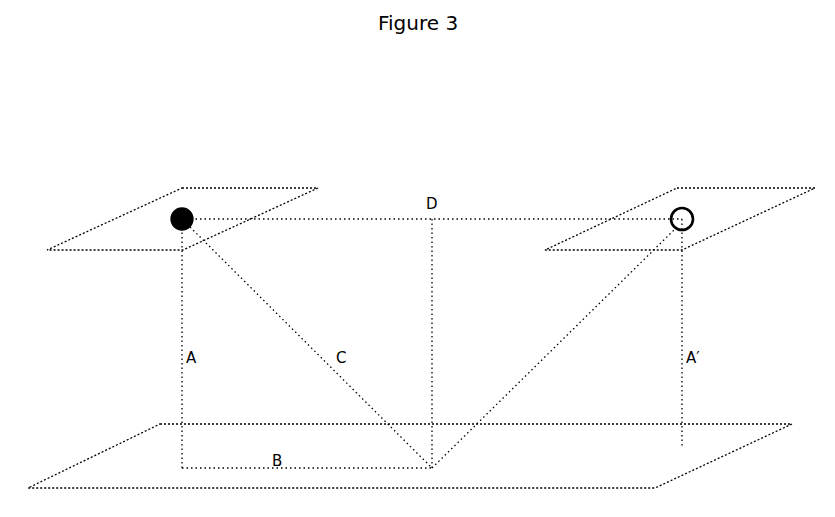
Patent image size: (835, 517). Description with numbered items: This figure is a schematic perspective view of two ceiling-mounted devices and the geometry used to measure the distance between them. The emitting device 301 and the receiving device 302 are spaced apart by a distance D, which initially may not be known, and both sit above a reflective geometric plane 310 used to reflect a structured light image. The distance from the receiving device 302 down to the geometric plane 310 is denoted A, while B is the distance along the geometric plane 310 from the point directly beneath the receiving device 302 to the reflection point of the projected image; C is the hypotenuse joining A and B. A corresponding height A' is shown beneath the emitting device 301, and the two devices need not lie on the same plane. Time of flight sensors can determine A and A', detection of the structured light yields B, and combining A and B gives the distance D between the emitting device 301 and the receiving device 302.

The receiving device 302 is at (182, 196).
The emitting device 301 is at (680, 196).
The geometric plane 310 is at (410, 456).